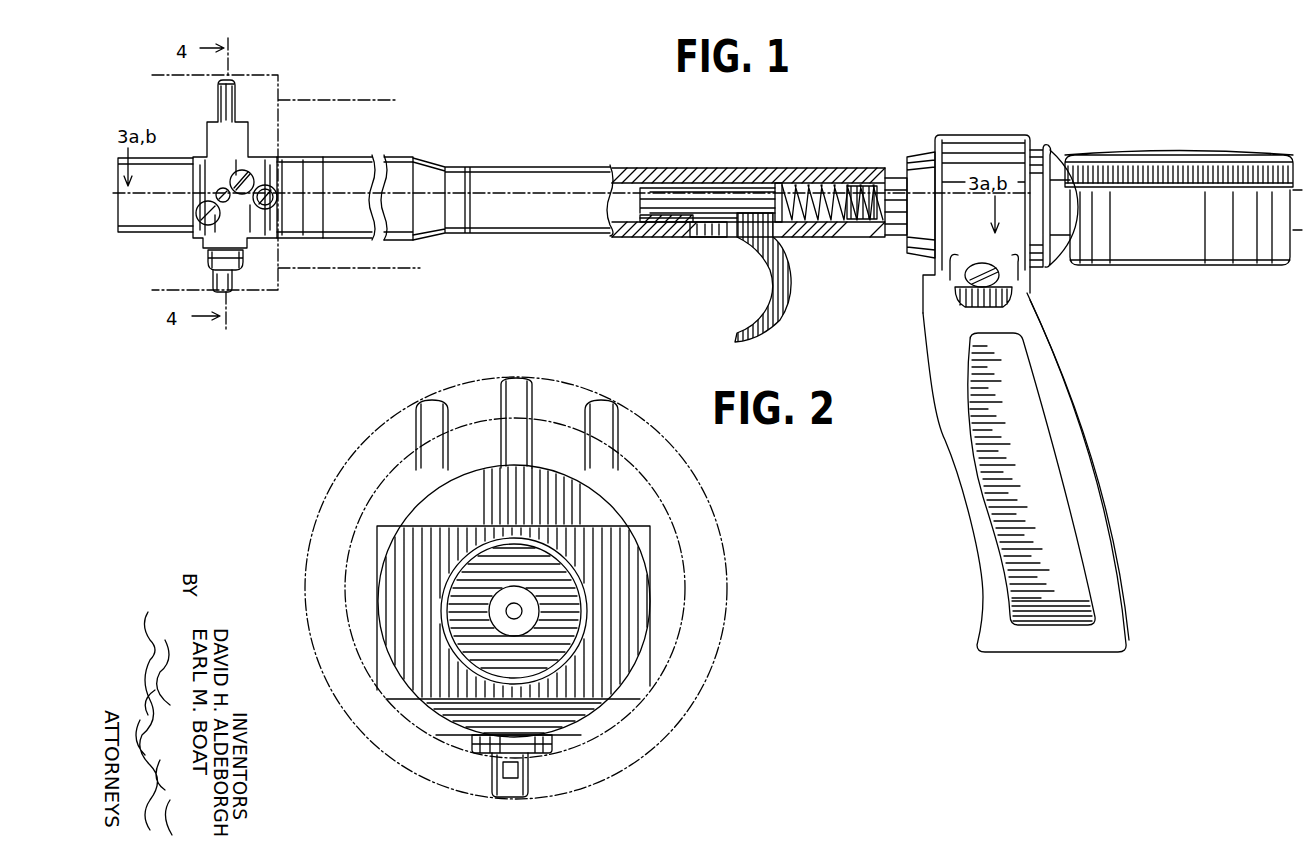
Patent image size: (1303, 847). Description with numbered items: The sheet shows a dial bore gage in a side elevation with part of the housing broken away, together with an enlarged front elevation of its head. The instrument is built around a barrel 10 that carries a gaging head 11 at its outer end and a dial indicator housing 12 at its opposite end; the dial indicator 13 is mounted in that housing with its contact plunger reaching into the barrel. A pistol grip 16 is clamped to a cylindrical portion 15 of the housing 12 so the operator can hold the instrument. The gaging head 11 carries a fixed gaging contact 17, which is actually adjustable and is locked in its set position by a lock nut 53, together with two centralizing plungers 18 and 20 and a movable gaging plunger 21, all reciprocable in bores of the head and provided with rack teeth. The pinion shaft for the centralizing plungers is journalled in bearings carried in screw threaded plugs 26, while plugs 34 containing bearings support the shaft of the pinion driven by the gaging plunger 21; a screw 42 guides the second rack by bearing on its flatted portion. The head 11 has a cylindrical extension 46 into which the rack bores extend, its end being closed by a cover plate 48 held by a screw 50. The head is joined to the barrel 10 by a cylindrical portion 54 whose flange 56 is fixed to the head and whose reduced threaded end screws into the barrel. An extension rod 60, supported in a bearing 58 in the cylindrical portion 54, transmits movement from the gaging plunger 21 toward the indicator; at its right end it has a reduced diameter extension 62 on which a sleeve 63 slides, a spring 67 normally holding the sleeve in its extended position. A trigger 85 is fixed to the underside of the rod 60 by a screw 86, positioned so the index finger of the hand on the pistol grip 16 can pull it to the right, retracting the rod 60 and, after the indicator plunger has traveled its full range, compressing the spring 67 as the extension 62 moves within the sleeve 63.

In FIG. 1, the barrel 10 is at (523, 185).
In FIG. 1, the gaging head 11 is at (271, 146).
In FIG. 2, the gaging head 11 is at (661, 506).
In FIG. 1, the dial indicator housing 12 is at (1185, 245).
In FIG. 1, the dial indicator 13 is at (1152, 152).
In FIG. 1, the cylindrical portion 15 is at (1043, 148).
In FIG. 1, the pistol grip 16 is at (952, 428).
In FIG. 1, the fixed gaging contact 17 is at (236, 282).
In FIG. 2, the fixed gaging contact 17 is at (527, 773).
In FIG. 2, the centralizing plunger 18 is at (432, 402).
In FIG. 1, the centralizing plunger 20 is at (228, 110).
In FIG. 2, the centralizing plunger 20 is at (605, 407).
In FIG. 1, the movable gaging plunger 21 is at (228, 80).
In FIG. 2, the movable gaging plunger 21 is at (517, 393).
In FIG. 1, the screw threaded plugs 26 is at (193, 230).
In FIG. 1, the plugs 34 is at (254, 172).
In FIG. 1, the screw 42 is at (270, 235).
In FIG. 1, the cylindrical extension 46 is at (147, 222).
In FIG. 2, the cylindrical extension 46 is at (574, 571).
In FIG. 2, the cover plate 48 is at (558, 591).
In FIG. 2, the screw 50 is at (492, 613).
In FIG. 1, the lock nut 53 is at (208, 258).
In FIG. 2, the lock nut 53 is at (552, 742).
In FIG. 1, the cylindrical portion 54 is at (370, 160).
In FIG. 1, the flange 56 is at (314, 178).
In FIG. 1, the bearing 58 is at (680, 170).
In FIG. 1, the extension rod 60 is at (634, 188).
In FIG. 1, the reduced diameter extension 62 is at (812, 183).
In FIG. 1, the sleeve 63 is at (855, 184).
In FIG. 1, the spring 67 is at (782, 182).
In FIG. 1, the trigger 85 is at (762, 252).
In FIG. 1, the screw 86 is at (710, 237).